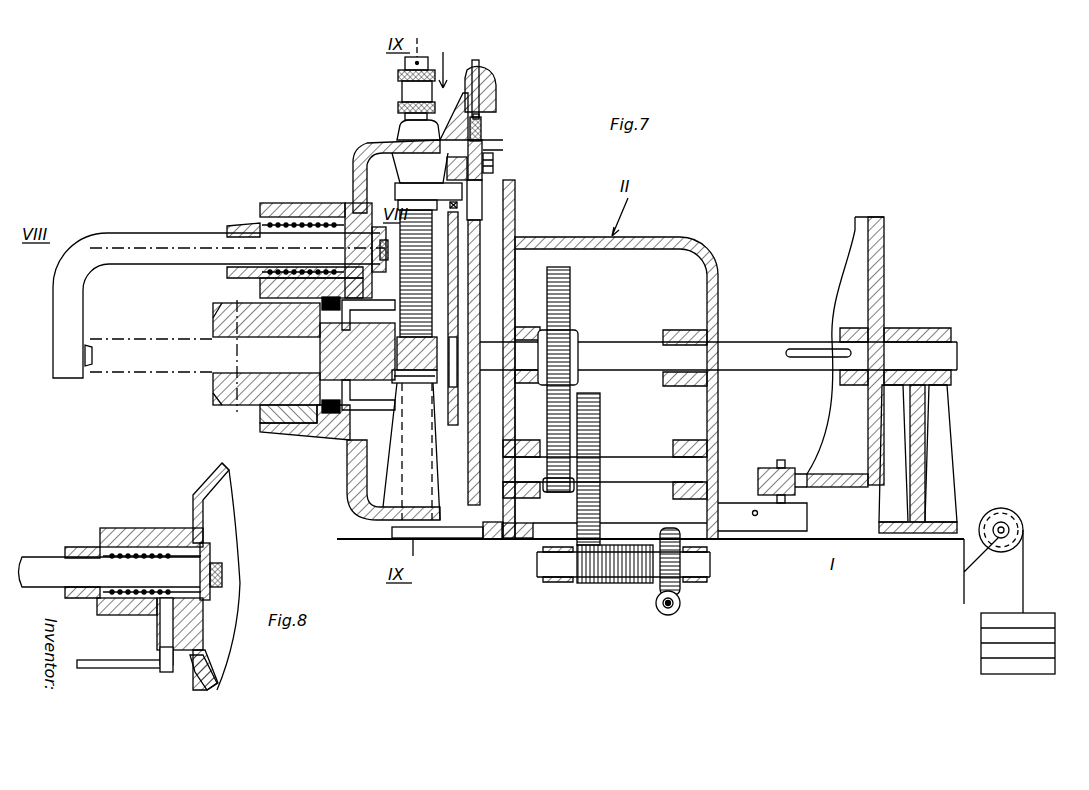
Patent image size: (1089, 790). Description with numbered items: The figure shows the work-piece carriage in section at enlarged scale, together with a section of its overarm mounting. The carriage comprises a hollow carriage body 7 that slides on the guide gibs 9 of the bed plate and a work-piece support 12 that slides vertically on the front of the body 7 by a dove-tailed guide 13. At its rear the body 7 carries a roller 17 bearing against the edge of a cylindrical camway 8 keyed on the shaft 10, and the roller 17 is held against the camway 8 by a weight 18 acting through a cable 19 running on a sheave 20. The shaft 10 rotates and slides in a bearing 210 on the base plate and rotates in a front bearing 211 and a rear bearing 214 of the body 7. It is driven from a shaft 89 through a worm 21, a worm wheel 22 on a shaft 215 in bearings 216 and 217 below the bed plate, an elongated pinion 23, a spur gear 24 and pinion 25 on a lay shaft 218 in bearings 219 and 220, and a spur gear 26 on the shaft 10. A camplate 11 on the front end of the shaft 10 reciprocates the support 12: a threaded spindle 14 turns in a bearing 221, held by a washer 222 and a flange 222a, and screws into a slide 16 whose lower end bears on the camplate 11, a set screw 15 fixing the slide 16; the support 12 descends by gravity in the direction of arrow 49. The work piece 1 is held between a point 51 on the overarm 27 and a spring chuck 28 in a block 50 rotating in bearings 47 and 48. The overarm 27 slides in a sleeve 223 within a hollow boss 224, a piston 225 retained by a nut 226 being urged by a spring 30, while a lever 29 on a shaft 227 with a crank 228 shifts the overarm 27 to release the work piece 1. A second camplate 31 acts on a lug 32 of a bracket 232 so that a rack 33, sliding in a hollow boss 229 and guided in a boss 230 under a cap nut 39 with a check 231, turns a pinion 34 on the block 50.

In FIG. 7, the work piece 1 is at (148, 370).
In FIG. 7, the carriage body 7 is at (653, 238).
In FIG. 7, the cylindrical camway 8 is at (838, 272).
In FIG. 7, the guide gibs 9 is at (784, 534).
In FIG. 7, the shaft 10 is at (756, 372).
In FIG. 7, the camplate 11 is at (490, 228).
In FIG. 7, the work-piece support 12 is at (360, 165).
In FIG. 8, the work-piece support 12 is at (197, 495).
In FIG. 7, the dove-tailed guide 13 is at (460, 190).
In FIG. 7, the threaded spindle 14 is at (482, 122).
In FIG. 7, the set screw 15 is at (490, 166).
In FIG. 7, the slide 16 is at (480, 200).
In FIG. 7, the roller 17 is at (768, 466).
In FIG. 7, the weight 18 is at (981, 640).
In FIG. 7, the cable 19 is at (1023, 570).
In FIG. 7, the sheave 20 is at (1004, 552).
In FIG. 7, the worm 21 is at (681, 604).
In FIG. 7, the worm wheel 22 is at (682, 584).
In FIG. 7, the elongated pinion 23 is at (616, 583).
In FIG. 7, the spur gear 24 is at (600, 508).
In FIG. 7, the pinion 25 is at (560, 492).
In FIG. 7, the spur gear 26 is at (571, 300).
In FIG. 7, the overarm 27 is at (92, 272).
In FIG. 8, the overarm 27 is at (45, 565).
In FIG. 7, the spring chuck 28 is at (228, 400).
In FIG. 8, the lever 29 is at (104, 660).
In FIG. 7, the spring 30 is at (290, 220).
In FIG. 8, the spring 30 is at (125, 548).
In FIG. 7, the second camplate 31 is at (482, 268).
In FIG. 7, the lug 32 is at (520, 190).
In FIG. 7, the rack 33 is at (400, 294).
In FIG. 7, the pinion 34 is at (437, 338).
In FIG. 7, the cap nut 39 is at (402, 95).
In FIG. 7, the bearing 47 is at (290, 432).
In FIG. 7, the bearing 48 is at (372, 392).
In FIG. 7, the arrow 49 is at (453, 70).
In FIG. 7, the block 50 is at (252, 418).
In FIG. 7, the point 51 is at (90, 368).
In FIG. 7, the shaft 89 is at (667, 612).
In FIG. 7, the bearing 210 is at (945, 328).
In FIG. 7, the bearing 211 is at (522, 326).
In FIG. 7, the bearing 214 is at (678, 328).
In FIG. 7, the shaft 215 is at (537, 565).
In FIG. 7, the bearing 216 is at (552, 582).
In FIG. 7, the bearing 217 is at (707, 550).
In FIG. 7, the lay shaft 218 is at (613, 457).
In FIG. 7, the bearing 219 is at (527, 440).
In FIG. 7, the bearing 220 is at (688, 441).
In FIG. 7, the bearing 221 is at (494, 98).
In FIG. 7, the washer 222 is at (480, 82).
In FIG. 7, the flange 222a is at (480, 117).
In FIG. 7, the sleeve 223 is at (248, 223).
In FIG. 8, the sleeve 223 is at (85, 546).
In FIG. 7, the hollow boss 224 is at (308, 203).
In FIG. 8, the hollow boss 224 is at (145, 528).
In FIG. 7, the piston 225 is at (383, 226).
In FIG. 8, the piston 225 is at (212, 548).
In FIG. 7, the nut 226 is at (387, 262).
In FIG. 8, the nut 226 is at (222, 580).
In FIG. 8, the shaft 227 is at (196, 672).
In FIG. 8, the crank 228 is at (200, 618).
In FIG. 7, the hollow boss 229 is at (395, 493).
In FIG. 7, the boss 230 is at (405, 130).
In FIG. 7, the check 231 is at (405, 62).
In FIG. 7, the bracket 232 is at (490, 177).